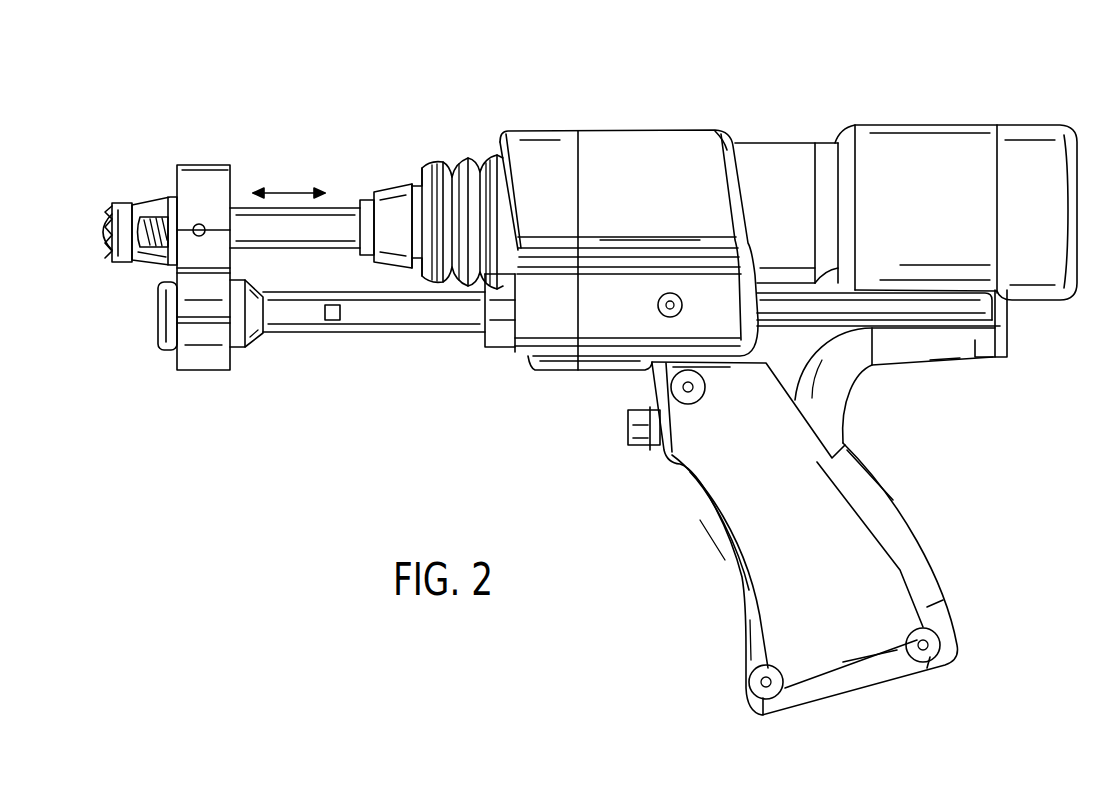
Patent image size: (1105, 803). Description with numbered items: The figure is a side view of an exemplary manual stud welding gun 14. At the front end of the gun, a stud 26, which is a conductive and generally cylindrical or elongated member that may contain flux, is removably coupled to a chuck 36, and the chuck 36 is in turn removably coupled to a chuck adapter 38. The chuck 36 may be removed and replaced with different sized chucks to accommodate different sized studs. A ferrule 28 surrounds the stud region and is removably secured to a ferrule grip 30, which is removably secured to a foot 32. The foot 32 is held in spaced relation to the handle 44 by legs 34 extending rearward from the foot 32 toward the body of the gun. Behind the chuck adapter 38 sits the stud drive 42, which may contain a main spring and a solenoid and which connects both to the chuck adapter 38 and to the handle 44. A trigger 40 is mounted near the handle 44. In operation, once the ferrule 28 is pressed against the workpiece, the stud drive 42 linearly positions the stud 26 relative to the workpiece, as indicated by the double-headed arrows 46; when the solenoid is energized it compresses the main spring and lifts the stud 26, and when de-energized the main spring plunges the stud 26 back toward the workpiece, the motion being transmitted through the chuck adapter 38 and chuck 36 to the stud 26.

The stud welding gun 14 is at (613, 56).
The stud 26 is at (104, 207).
The ferrule 28 is at (122, 205).
The ferrule grip 30 is at (152, 262).
The foot 32 is at (193, 372).
The legs 34 is at (291, 335).
The chuck 36 is at (340, 203).
The chuck adapter 38 is at (395, 182).
The trigger 40 is at (628, 421).
The stud drive 42 is at (903, 123).
The handle 44 is at (796, 712).
The arrows 46 is at (273, 194).